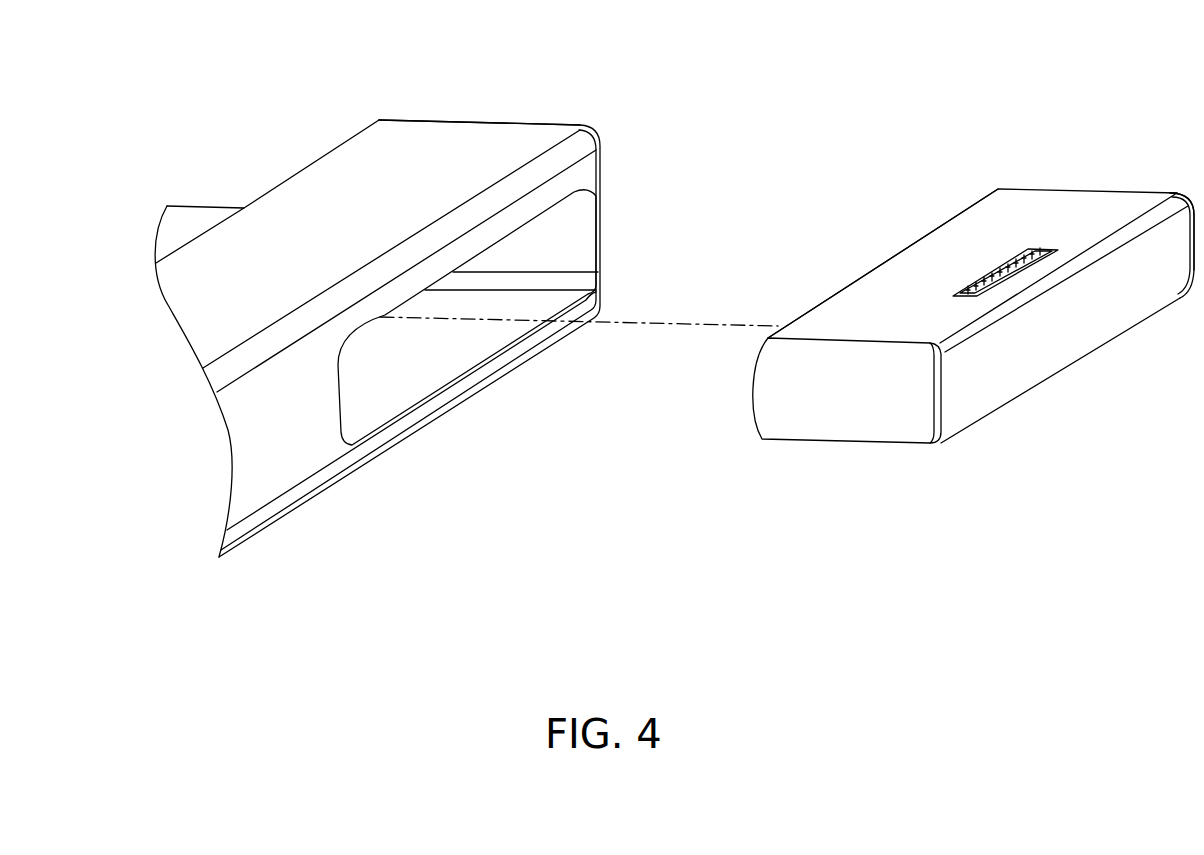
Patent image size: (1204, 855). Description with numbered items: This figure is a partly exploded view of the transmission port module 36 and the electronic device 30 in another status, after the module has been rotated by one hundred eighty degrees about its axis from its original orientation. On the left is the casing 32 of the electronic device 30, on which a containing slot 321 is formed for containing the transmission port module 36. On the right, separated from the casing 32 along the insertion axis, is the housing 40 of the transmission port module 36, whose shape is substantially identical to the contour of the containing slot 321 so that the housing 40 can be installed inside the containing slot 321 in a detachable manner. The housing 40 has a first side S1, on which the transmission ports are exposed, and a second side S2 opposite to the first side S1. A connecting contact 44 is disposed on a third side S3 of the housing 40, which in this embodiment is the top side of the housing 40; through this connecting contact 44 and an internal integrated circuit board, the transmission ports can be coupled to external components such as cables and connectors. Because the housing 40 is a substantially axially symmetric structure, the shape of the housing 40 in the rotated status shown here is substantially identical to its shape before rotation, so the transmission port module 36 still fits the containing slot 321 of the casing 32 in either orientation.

The electronic device 30 is at (462, 300).
The casing 32 is at (470, 140).
The containing slot 321 is at (402, 385).
The transmission port module 36 is at (1133, 158).
The housing 40 is at (973, 255).
The connecting contact 44 is at (1012, 284).
The first side S1 is at (933, 228).
The second side S2 is at (1098, 323).
The third side S3 is at (983, 215).